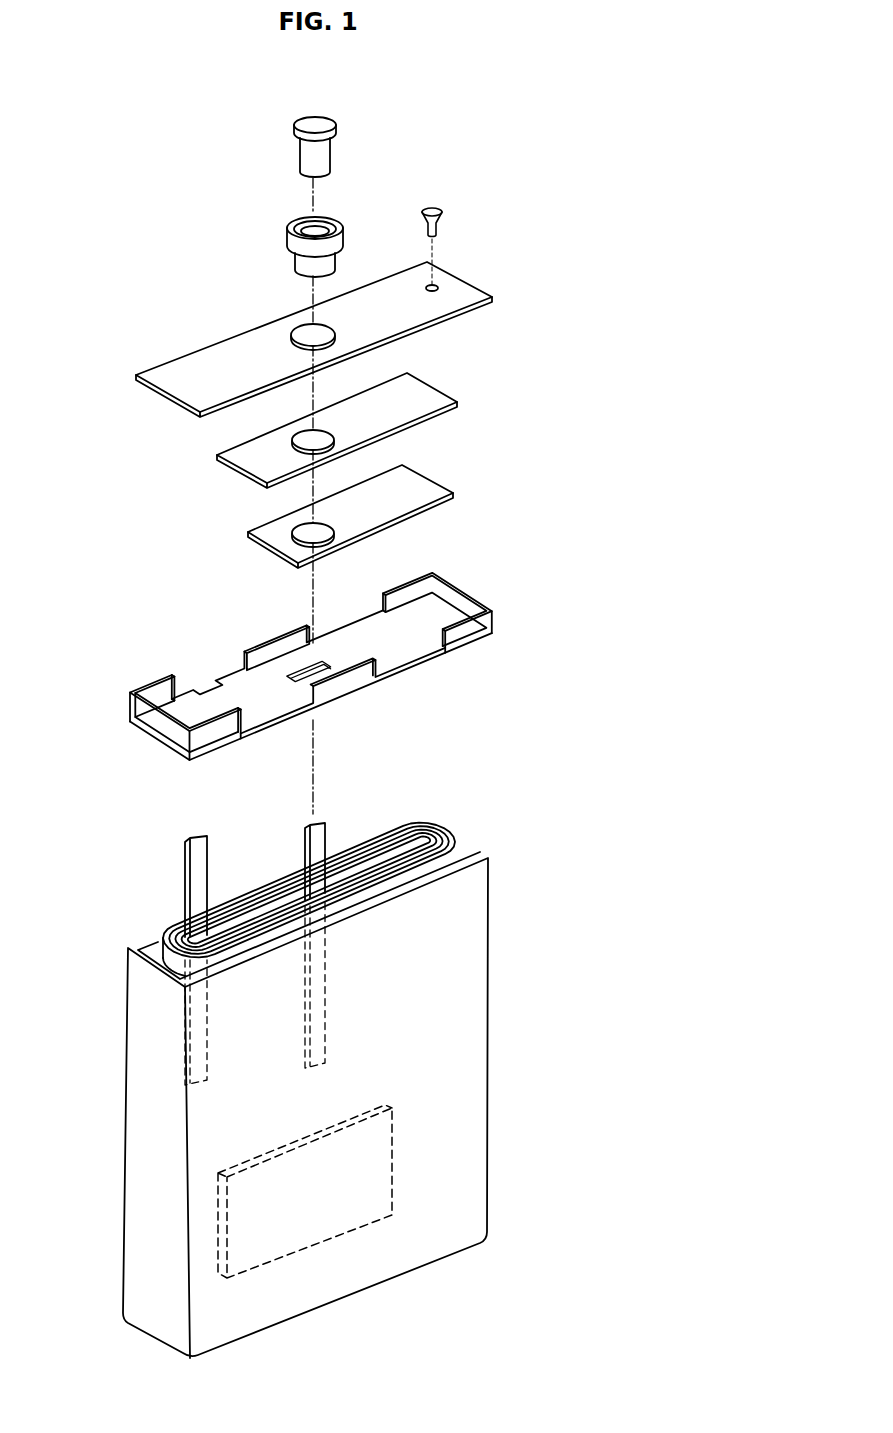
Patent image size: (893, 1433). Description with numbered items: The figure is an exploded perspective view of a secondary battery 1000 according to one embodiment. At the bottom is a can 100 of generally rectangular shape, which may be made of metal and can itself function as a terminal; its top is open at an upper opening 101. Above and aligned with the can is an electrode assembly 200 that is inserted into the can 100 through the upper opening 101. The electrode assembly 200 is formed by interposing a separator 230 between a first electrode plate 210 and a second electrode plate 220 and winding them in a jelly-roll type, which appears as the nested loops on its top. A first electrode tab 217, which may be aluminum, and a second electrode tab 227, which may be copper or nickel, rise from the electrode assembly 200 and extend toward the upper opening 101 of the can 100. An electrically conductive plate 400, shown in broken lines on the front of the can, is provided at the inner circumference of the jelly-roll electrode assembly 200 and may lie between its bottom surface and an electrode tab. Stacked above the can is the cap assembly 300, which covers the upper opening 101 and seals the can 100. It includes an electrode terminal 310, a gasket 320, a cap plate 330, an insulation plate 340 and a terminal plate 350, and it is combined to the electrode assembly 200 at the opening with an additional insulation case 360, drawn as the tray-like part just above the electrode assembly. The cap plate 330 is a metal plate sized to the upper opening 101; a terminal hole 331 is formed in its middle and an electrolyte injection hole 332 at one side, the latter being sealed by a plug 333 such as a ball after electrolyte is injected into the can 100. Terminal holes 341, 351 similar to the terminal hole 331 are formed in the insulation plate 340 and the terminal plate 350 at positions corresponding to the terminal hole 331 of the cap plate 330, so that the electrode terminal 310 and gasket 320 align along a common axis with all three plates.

The secondary battery 1000 is at (94, 85).
The can 100 is at (470, 1006).
The upper opening 101 is at (463, 866).
The electrode assembly 200 is at (367, 816).
The first electrode plate 210 is at (456, 835).
The first electrode tab 217 is at (196, 862).
The second electrode plate 220 is at (428, 835).
The second electrode tab 227 is at (313, 845).
The separator 230 is at (446, 836).
The cap assembly 300 is at (543, 185).
The electrode terminal 310 is at (320, 122).
The gasket 320 is at (289, 222).
The cap plate 330 is at (184, 368).
The terminal hole 331 is at (296, 329).
The electrolyte injection hole 332 is at (437, 285).
The plug 333 is at (437, 209).
The insulation plate 340 is at (427, 392).
The terminal hole of insulation plate 341 is at (292, 447).
The terminal plate 350 is at (432, 483).
The terminal hole of terminal plate 351 is at (304, 538).
The insulation case 360 is at (160, 729).
The electrically conductive plate 400 is at (312, 1238).